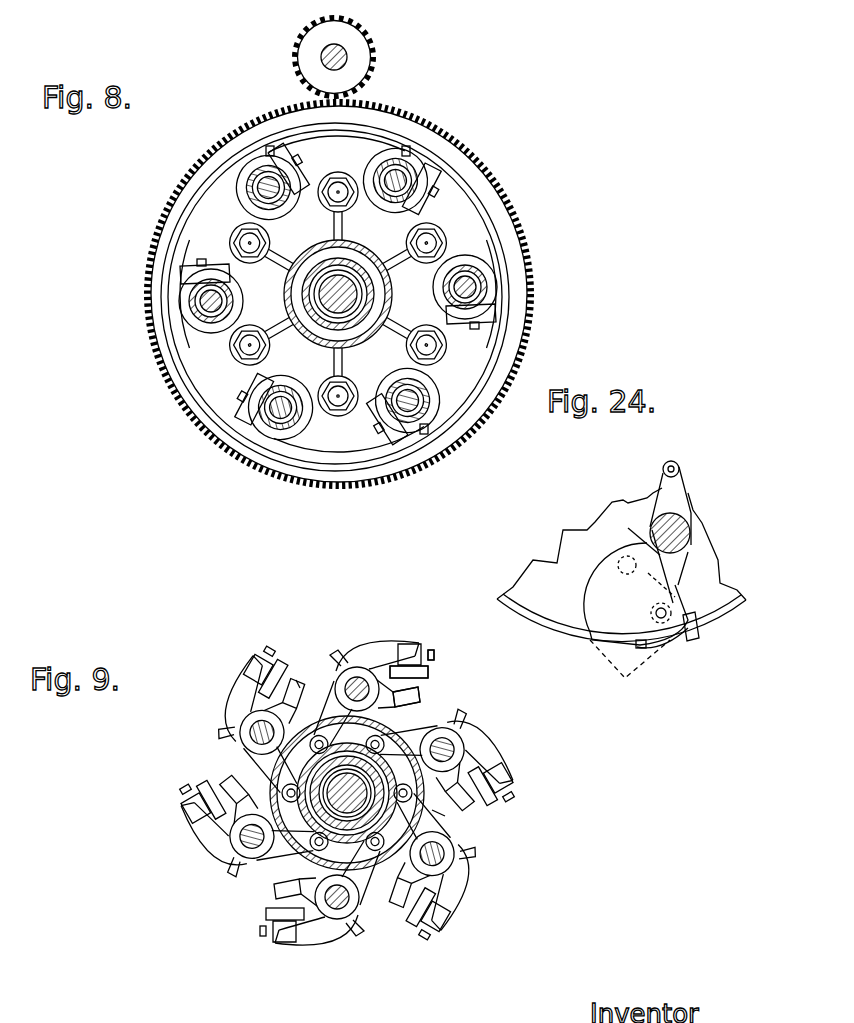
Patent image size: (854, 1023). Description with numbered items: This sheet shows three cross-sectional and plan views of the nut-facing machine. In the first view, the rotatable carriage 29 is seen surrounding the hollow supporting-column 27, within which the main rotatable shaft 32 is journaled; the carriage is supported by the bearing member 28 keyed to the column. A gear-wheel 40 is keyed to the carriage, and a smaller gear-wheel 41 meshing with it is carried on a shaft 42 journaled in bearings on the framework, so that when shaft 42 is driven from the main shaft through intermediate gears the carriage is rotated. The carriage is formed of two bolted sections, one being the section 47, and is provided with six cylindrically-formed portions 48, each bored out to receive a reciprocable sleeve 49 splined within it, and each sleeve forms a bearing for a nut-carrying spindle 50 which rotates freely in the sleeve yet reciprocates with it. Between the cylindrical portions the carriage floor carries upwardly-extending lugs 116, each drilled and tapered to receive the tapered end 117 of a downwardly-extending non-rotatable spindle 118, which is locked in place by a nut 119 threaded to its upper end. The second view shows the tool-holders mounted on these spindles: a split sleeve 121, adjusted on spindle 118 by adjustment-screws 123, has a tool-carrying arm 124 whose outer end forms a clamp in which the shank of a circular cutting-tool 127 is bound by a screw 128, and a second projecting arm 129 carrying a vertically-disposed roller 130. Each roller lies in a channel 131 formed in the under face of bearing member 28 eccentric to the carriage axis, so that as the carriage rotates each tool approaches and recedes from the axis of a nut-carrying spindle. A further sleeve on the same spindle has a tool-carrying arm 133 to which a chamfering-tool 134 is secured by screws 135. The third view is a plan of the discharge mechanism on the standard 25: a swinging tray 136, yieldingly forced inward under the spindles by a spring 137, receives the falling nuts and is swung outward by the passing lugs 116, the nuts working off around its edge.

In FIG. 8, the gear-wheel 40 is at (522, 238).
In FIG. 8, the gear-wheel 41 is at (372, 54).
In FIG. 8, the shaft 42 is at (334, 44).
In FIG. 8, the carriage section 47 is at (373, 447).
In FIG. 8, the cylindrically-formed portion 48 is at (400, 210).
In FIG. 8, the reciprocable sleeve 49 is at (391, 186).
In FIG. 8, the spindle 50 is at (390, 176).
In FIG. 8, the rotatable carriage 29 is at (288, 294).
In FIG. 8, the hollow supporting-column 27 is at (372, 300).
In FIG. 8, the main rotatable shaft 32 is at (346, 300).
In FIG. 9, the main rotatable shaft 32 is at (345, 810).
In FIG. 8, the lug 116 is at (268, 236).
In FIG. 8, the tapered end 117 is at (341, 175).
In FIG. 8, the nut 119 is at (443, 238).
In FIG. 24, the standard 25 is at (550, 622).
In FIG. 9, the bearing member 28 is at (398, 818).
In FIG. 24, the non-rotatable spindle 118 is at (676, 548).
In FIG. 9, the non-rotatable spindle 118 is at (357, 689).
In FIG. 9, the sleeve 121 is at (248, 718).
In FIG. 9, the adjustment-screw 123 is at (465, 728).
In FIG. 24, the tool-carrying arm 124 is at (678, 585).
In FIG. 9, the tool-carrying arm 124 is at (493, 752).
In FIG. 9, the tool 127 is at (430, 670).
In FIG. 9, the screw 128 is at (268, 660).
In FIG. 24, the projecting arm 129 is at (690, 483).
In FIG. 9, the projecting arm 129 is at (412, 727).
In FIG. 24, the roller 130 is at (663, 469).
In FIG. 9, the roller 130 is at (299, 795).
In FIG. 9, the channel 131 is at (454, 813).
In FIG. 24, the tool-carrying arm 133 is at (645, 540).
In FIG. 9, the tool-carrying arm 133 is at (310, 880).
In FIG. 9, the chamfering-tool 134 is at (420, 698).
In FIG. 9, the screw 135 is at (300, 688).
In FIG. 24, the swinging tray 136 is at (636, 610).
In FIG. 24, the spring 137 is at (680, 645).